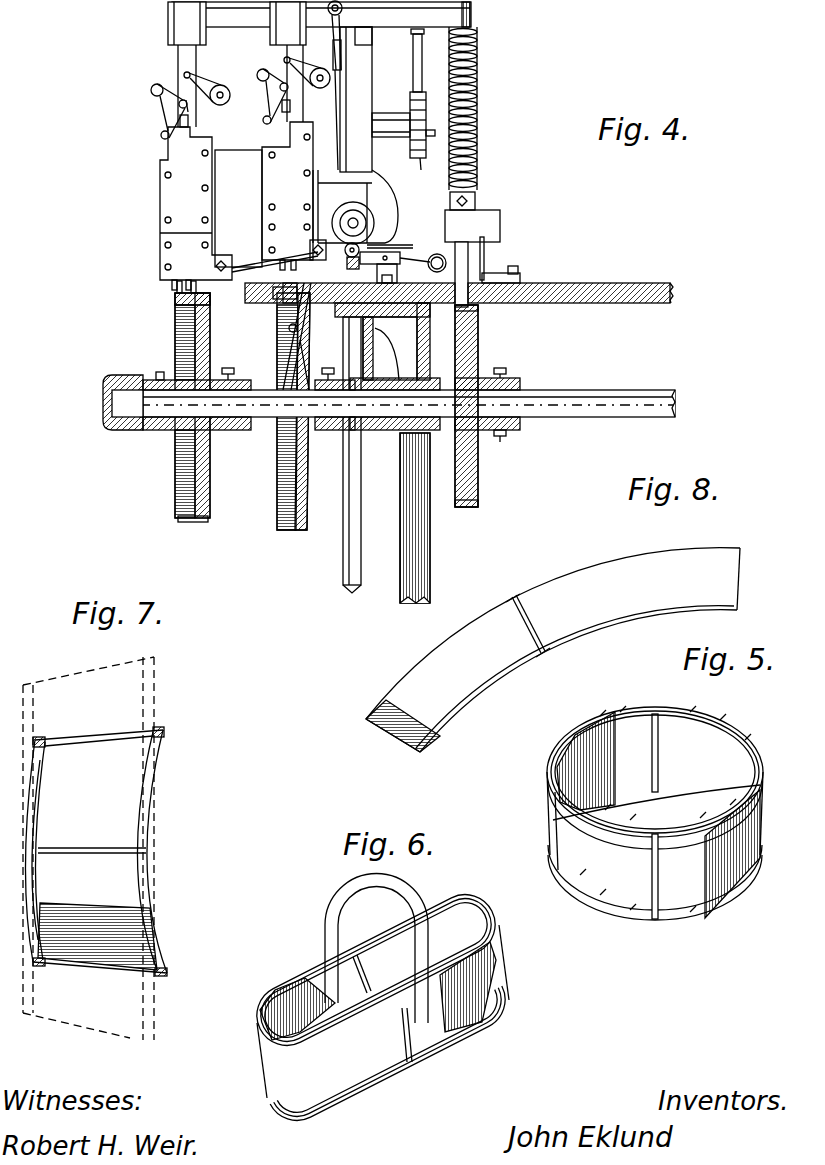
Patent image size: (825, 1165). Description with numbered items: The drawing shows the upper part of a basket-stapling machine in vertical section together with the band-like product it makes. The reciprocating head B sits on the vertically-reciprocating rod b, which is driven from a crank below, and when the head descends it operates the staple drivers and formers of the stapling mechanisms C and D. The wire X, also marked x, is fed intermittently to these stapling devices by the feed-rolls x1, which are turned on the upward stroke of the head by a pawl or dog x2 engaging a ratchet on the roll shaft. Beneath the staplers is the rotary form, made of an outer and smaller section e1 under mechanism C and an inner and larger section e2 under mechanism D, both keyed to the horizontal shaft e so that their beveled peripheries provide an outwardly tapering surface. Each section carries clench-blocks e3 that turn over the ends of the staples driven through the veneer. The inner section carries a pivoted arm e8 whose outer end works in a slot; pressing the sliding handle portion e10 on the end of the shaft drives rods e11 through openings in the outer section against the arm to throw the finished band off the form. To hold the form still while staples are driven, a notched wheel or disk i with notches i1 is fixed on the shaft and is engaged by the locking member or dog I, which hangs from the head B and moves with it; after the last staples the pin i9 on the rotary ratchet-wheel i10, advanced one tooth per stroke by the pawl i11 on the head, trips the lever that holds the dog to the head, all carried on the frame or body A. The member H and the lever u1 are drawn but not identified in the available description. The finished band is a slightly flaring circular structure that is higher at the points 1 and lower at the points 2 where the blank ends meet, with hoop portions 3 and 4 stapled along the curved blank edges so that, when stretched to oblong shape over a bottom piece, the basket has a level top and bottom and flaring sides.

In FIG. 4, the reciprocating head B is at (245, 18).
In FIG. 4, the vertically-reciprocating rod b is at (350, 62).
In FIG. 4, the stapling mechanism C is at (185, 192).
In FIG. 4, the stapling mechanism D is at (272, 165).
In FIG. 4, the wire X is at (252, 262).
In FIG. 4, the pawl or dog x2 is at (345, 120).
In FIG. 4, the feed-rolls x1 is at (357, 220).
In FIG. 4, the wire x is at (398, 244).
In FIG. 4, the pawl i11 is at (422, 66).
In FIG. 4, the pin i9 is at (436, 134).
In FIG. 4, the rotary ratchet-wheel i10 is at (421, 168).
In FIG. 4, the locking member or dog I is at (463, 272).
In FIG. 4, the frame or body A is at (600, 282).
In FIG. 4, the column H is at (415, 560).
In FIG. 4, the shaft e is at (574, 396).
In FIG. 4, the outer form section e1 is at (195, 482).
In FIG. 4, the inner form section e2 is at (300, 500).
In FIG. 4, the clench-blocks e3 is at (178, 535).
In FIG. 4, the pivoted arm e8 is at (300, 350).
In FIG. 4, the sliding handle portion e10 is at (115, 376).
In FIG. 4, the rods or projections e11 is at (168, 378).
In FIG. 4, the lever u1 is at (326, 326).
In FIG. 4, the notched wheel or disk i is at (470, 348).
In FIG. 4, the notches i1 is at (475, 306).
In FIG. 7, the high points of band 1 is at (160, 735).
In FIG. 5, the high points of band 1 is at (547, 768).
In FIG. 5, the blank-meeting points 2 is at (655, 714).
In FIG. 7, the hoop portion 3 is at (146, 851).
In FIG. 5, the hoop portion 3 is at (578, 818).
In FIG. 7, the hoop portion 4 is at (32, 805).
In FIG. 5, the hoop portion 4 is at (583, 900).
In FIG. 6, the hoop portion 4 is at (365, 992).